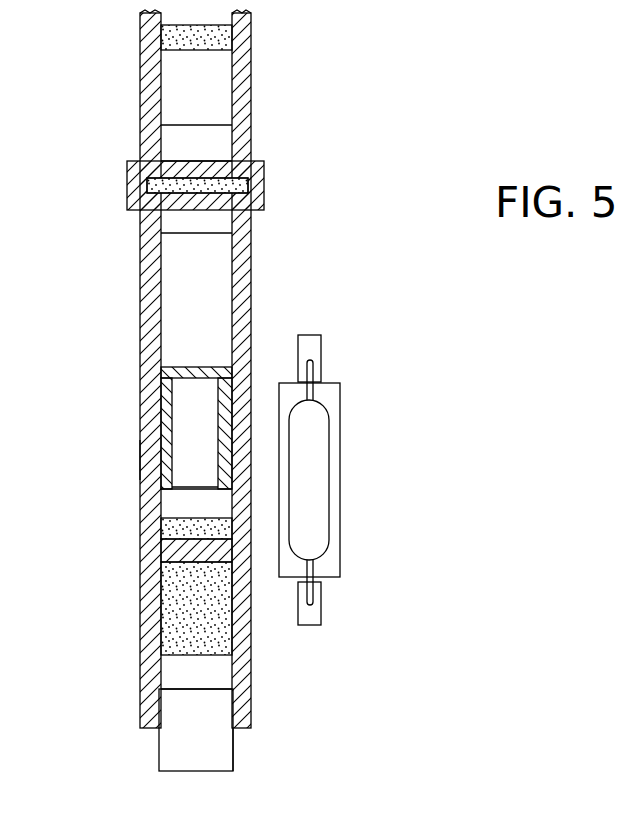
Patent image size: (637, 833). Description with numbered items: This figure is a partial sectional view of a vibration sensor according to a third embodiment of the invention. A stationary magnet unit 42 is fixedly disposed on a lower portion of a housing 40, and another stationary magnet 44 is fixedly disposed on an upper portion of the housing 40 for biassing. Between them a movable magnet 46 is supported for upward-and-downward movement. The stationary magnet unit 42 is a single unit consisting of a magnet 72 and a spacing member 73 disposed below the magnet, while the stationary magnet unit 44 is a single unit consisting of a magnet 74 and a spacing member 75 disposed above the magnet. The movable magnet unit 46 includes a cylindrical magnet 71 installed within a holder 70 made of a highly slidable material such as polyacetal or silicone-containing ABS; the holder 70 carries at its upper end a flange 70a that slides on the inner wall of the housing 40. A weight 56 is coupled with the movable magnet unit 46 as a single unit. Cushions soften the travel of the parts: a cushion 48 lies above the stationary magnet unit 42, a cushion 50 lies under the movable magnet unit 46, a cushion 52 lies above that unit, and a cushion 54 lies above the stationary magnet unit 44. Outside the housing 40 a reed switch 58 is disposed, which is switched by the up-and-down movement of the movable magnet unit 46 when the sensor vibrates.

The housing 40 is at (135, 190).
The stationary magnet unit 42 is at (234, 745).
The stationary magnet 44 is at (161, 75).
The movable magnet 46 is at (161, 461).
The cushion 48 is at (195, 598).
The cushion 50 is at (176, 528).
The cushion 52 is at (245, 185).
The cushion 54 is at (222, 40).
The weight 56 is at (222, 270).
The reed switch 58 is at (315, 483).
The holder 70 is at (162, 382).
The flange 70a is at (178, 368).
The cylindrical magnet 71 is at (195, 430).
The magnet 72 is at (185, 668).
The spacing member 73 is at (180, 745).
The magnet 74 is at (178, 138).
The spacing member 75 is at (220, 95).